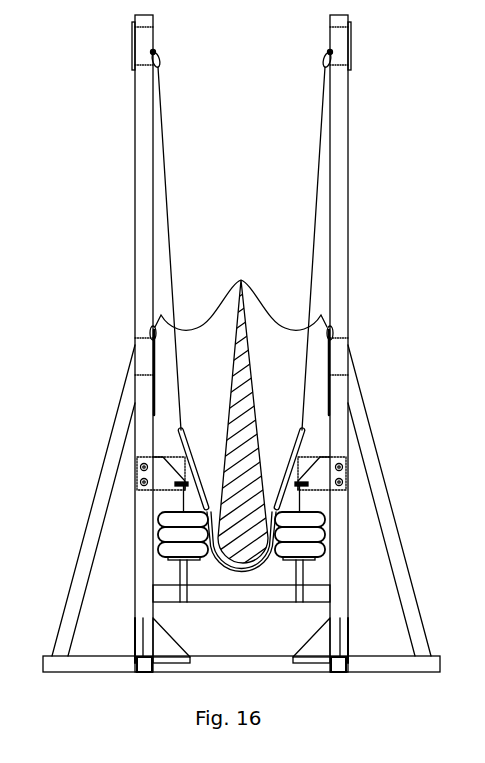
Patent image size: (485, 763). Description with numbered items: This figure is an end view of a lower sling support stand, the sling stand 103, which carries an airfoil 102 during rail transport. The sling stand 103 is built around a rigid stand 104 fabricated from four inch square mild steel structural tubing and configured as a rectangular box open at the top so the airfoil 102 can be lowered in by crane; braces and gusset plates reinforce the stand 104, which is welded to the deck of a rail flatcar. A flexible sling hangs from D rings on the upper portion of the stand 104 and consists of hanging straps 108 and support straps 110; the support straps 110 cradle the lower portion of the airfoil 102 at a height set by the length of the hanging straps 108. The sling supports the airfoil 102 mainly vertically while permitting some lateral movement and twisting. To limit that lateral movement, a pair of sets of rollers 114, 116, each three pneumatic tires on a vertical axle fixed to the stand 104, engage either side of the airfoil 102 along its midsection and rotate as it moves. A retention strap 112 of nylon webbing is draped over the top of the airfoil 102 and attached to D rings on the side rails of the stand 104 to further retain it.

The airfoil 102 is at (236, 327).
The sling stand 103 is at (77, 230).
The rigid stand 104 is at (134, 133).
The hanging straps 108 is at (163, 132).
The support straps 110 is at (256, 572).
The retention strap 112 is at (267, 307).
The set of rollers 114 is at (158, 545).
The set of rollers 116 is at (325, 540).